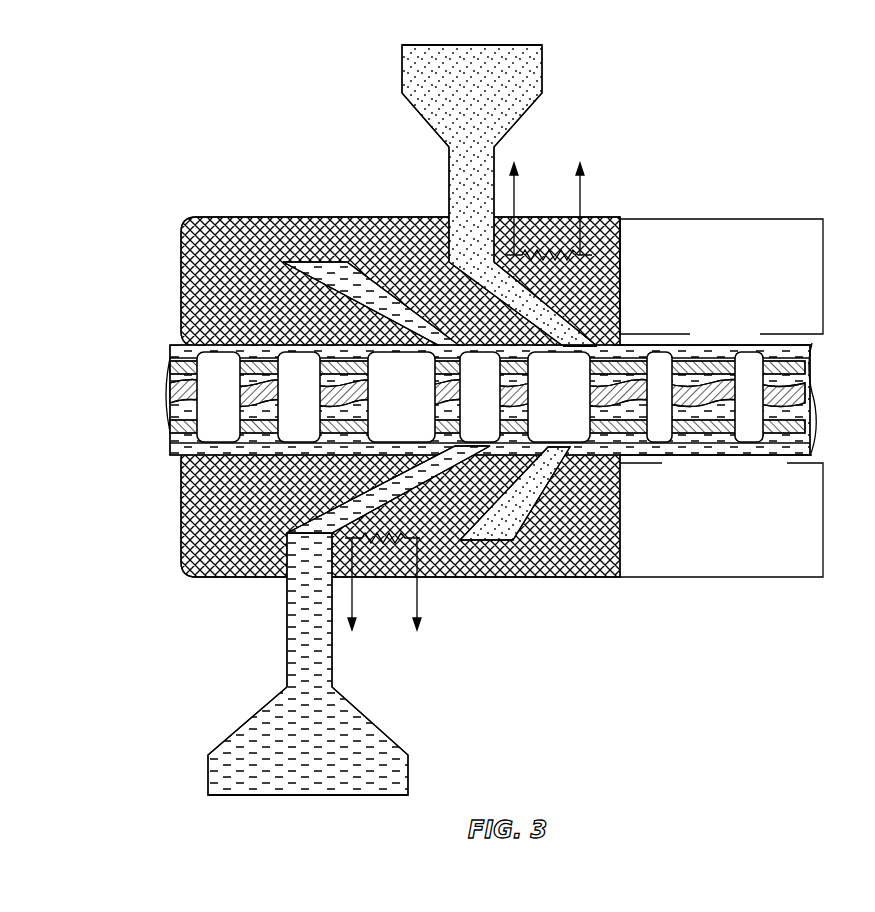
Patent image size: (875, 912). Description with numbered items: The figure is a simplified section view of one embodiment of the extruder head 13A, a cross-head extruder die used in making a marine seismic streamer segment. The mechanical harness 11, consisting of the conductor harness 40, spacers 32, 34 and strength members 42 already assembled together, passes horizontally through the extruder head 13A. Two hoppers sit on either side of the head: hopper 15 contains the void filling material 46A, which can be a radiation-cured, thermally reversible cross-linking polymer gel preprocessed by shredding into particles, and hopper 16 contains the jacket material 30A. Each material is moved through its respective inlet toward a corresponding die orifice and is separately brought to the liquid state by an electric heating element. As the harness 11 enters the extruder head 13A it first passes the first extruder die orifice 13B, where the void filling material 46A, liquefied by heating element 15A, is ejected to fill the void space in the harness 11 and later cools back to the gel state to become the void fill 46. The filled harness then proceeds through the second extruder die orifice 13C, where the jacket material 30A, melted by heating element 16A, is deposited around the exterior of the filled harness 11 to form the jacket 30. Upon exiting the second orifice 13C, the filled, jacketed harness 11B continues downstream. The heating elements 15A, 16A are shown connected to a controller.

The mechanical harness 11 is at (183, 350).
The filled, jacketed harness 11B is at (697, 350).
The extruder head 13A is at (492, 580).
The first extruder die orifice 13B is at (462, 448).
The second extruder die orifice 13C is at (612, 293).
The hopper 15 is at (243, 727).
The heating element 15A is at (378, 545).
The hopper 16 is at (542, 74).
The heating element 16A is at (527, 253).
The jacket 30 is at (760, 456).
The jacket material 30A is at (440, 45).
The spacers 32 is at (657, 444).
The spacers 34 is at (565, 360).
The conductor harness 40 is at (172, 388).
The strength members 42 is at (175, 362).
The void fill 46 is at (710, 357).
The void filling material 46A is at (300, 795).